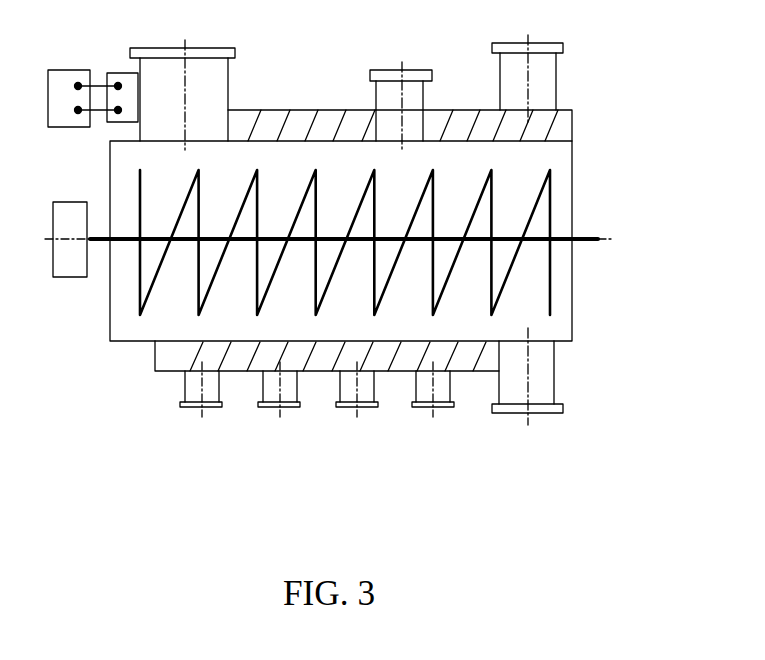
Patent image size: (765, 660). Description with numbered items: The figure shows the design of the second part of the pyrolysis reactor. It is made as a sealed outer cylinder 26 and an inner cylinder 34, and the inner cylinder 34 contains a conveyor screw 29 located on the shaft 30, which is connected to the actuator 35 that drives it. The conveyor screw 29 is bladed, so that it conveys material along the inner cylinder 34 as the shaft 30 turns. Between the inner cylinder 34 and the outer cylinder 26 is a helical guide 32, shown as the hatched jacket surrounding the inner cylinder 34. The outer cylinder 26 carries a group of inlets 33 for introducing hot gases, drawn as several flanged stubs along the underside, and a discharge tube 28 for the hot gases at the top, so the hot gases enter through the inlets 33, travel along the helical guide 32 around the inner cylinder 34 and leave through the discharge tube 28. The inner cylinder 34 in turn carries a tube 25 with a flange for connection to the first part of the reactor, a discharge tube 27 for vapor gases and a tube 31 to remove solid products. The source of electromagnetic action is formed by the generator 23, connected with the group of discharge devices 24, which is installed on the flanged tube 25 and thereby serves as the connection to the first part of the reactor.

The generator 23 is at (78, 76).
The group of discharge devices 24 is at (110, 77).
The tube with a flange 25 is at (213, 82).
The sealed outer cylinder 26 is at (297, 110).
The discharge tube for vapor gases 27 is at (407, 104).
The discharge tube for hot gases 28 is at (545, 97).
The conveyor screw 29 is at (553, 180).
The shaft 30 is at (585, 238).
The tube to remove solid products 31 is at (513, 397).
The helical guide 32 is at (468, 363).
The group of inlets 33 is at (428, 397).
The inner cylinder 34 is at (138, 341).
The actuator 35 is at (65, 228).